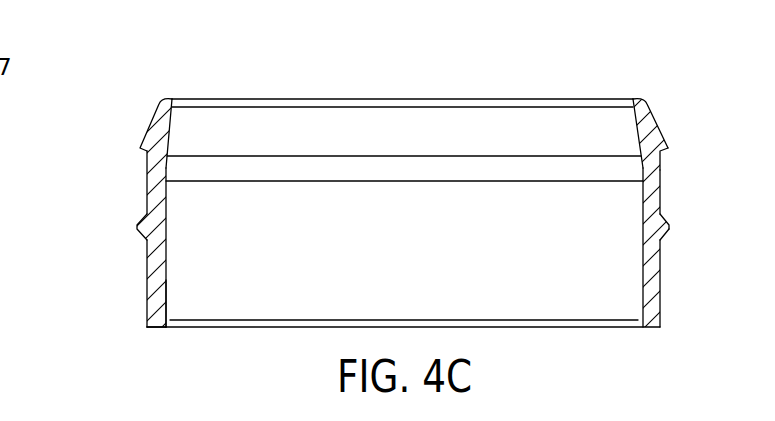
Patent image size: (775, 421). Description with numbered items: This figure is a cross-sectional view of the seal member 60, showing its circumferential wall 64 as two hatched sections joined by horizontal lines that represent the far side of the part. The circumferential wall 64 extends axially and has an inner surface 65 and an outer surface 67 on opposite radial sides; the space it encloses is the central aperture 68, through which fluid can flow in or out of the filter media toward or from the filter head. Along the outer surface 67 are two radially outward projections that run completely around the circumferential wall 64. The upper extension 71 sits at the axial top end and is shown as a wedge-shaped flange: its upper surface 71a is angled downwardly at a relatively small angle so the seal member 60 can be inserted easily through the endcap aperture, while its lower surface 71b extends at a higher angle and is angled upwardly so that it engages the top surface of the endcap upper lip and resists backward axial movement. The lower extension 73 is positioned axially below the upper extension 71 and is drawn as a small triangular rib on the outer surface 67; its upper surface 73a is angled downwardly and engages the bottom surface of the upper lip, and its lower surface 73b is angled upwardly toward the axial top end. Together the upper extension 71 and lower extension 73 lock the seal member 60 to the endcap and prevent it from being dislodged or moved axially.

The seal member 60 is at (605, 75).
The central aperture 68 is at (362, 226).
The upper extension 71 is at (140, 148).
The upper surface 71a is at (660, 125).
The lower surface 71b is at (668, 150).
The lower extension 73 is at (135, 227).
The lower surface 73b is at (669, 222).
The upper surface 73a is at (662, 238).
The circumferential wall 64 is at (147, 259).
The outer surface 67 is at (147, 297).
The inner surface 65 is at (167, 280).